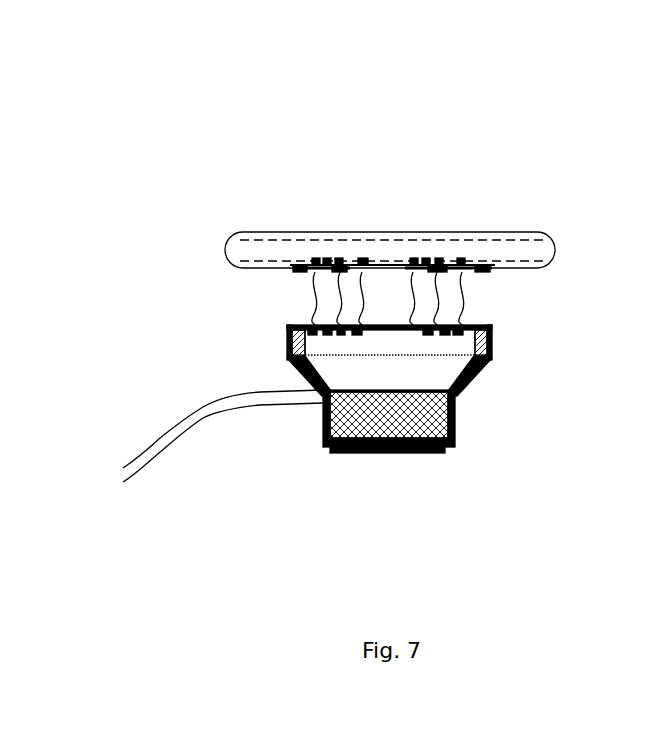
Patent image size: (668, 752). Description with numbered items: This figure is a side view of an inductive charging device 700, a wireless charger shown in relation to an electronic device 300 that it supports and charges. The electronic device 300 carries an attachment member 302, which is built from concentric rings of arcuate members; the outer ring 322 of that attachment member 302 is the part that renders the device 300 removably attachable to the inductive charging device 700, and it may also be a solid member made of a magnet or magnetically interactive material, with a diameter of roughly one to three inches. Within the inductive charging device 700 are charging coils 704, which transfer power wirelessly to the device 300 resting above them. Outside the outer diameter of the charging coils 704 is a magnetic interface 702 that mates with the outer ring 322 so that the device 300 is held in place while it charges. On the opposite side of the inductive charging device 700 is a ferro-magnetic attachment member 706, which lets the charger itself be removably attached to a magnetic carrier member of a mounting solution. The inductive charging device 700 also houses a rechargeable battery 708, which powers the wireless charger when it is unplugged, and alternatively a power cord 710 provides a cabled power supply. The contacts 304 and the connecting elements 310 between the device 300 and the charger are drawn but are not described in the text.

The electronic device 300 is at (340, 235).
The attachment member 302 is at (440, 265).
The electrical contacts 304 is at (352, 262).
The interconnect wires 310 is at (467, 313).
The outer ring 322 is at (295, 267).
The inductive charging device 700 is at (287, 355).
The magnetic interface 702 is at (493, 345).
The charging coils 704 is at (437, 330).
The ferro-magnetic attachment member 706 is at (393, 453).
The rechargeable battery 708 is at (347, 419).
The power cord 710 is at (213, 412).